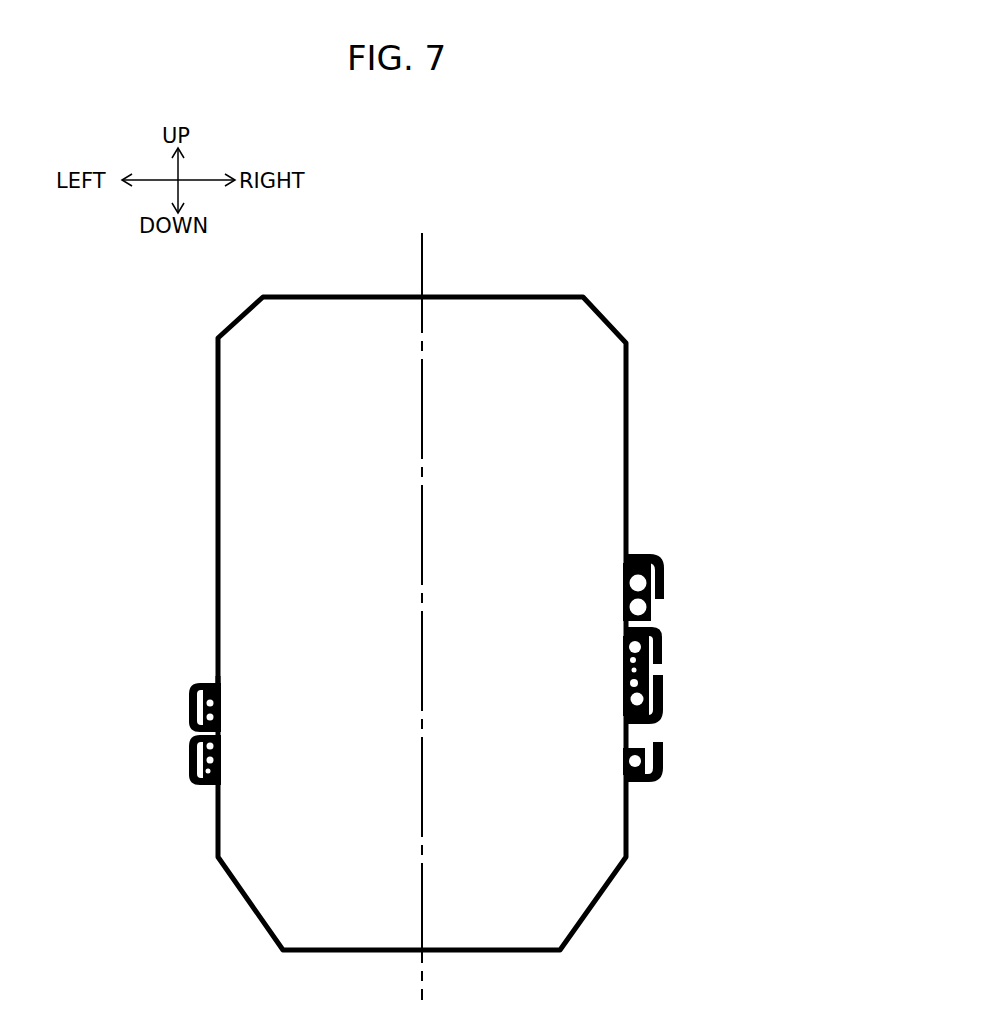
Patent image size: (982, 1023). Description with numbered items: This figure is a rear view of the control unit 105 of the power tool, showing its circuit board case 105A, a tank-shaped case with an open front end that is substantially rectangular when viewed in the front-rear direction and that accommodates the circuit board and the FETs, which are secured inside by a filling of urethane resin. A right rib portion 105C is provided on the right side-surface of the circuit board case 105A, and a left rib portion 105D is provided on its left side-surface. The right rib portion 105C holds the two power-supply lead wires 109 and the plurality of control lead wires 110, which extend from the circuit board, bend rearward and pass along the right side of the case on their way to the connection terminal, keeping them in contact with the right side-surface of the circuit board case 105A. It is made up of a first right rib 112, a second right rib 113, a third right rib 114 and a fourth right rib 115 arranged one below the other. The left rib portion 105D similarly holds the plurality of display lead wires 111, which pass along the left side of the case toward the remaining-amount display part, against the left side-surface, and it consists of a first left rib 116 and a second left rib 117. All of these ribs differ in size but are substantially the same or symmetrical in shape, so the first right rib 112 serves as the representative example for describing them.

The control unit 105 is at (424, 554).
The circuit board case 105A is at (485, 297).
The right rib portion 105C is at (731, 770).
The left rib portion 105D is at (111, 733).
The power-supply lead wires 109 is at (622, 558).
The control lead wires 110 is at (634, 764).
The display lead wires 111 is at (217, 683).
The first right rib 112 is at (657, 582).
The second right rib 113 is at (657, 642).
The third right rib 114 is at (658, 690).
The fourth right rib 115 is at (663, 762).
The first left rib 116 is at (190, 707).
The second left rib 117 is at (157, 765).